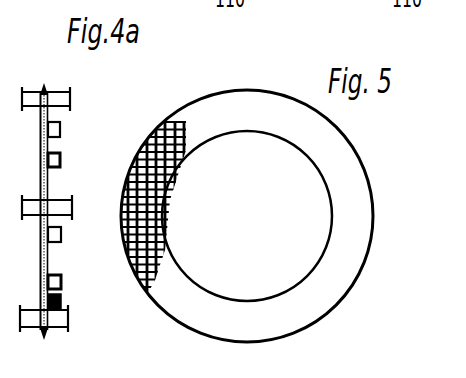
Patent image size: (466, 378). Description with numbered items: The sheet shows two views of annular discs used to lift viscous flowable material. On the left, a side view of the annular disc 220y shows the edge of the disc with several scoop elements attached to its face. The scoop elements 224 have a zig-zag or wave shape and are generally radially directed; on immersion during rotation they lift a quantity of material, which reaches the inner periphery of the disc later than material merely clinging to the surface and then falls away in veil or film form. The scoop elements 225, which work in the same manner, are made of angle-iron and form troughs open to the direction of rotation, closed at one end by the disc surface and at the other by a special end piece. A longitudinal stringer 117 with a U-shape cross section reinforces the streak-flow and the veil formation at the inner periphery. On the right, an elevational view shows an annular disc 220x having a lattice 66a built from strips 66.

In FIG. 4a, the longitudinal stringer 117 is at (73, 91).
In FIG. 4a, the annular disc 220y is at (50, 109).
In FIG. 4a, the scoop elements 225 is at (52, 157).
In FIG. 4a, the scoop elements 224 is at (53, 277).
In FIG. 5, the annular disc 220x is at (354, 152).
In FIG. 5, the lattice 66a is at (168, 125).
In FIG. 5, the strips 66 is at (187, 141).